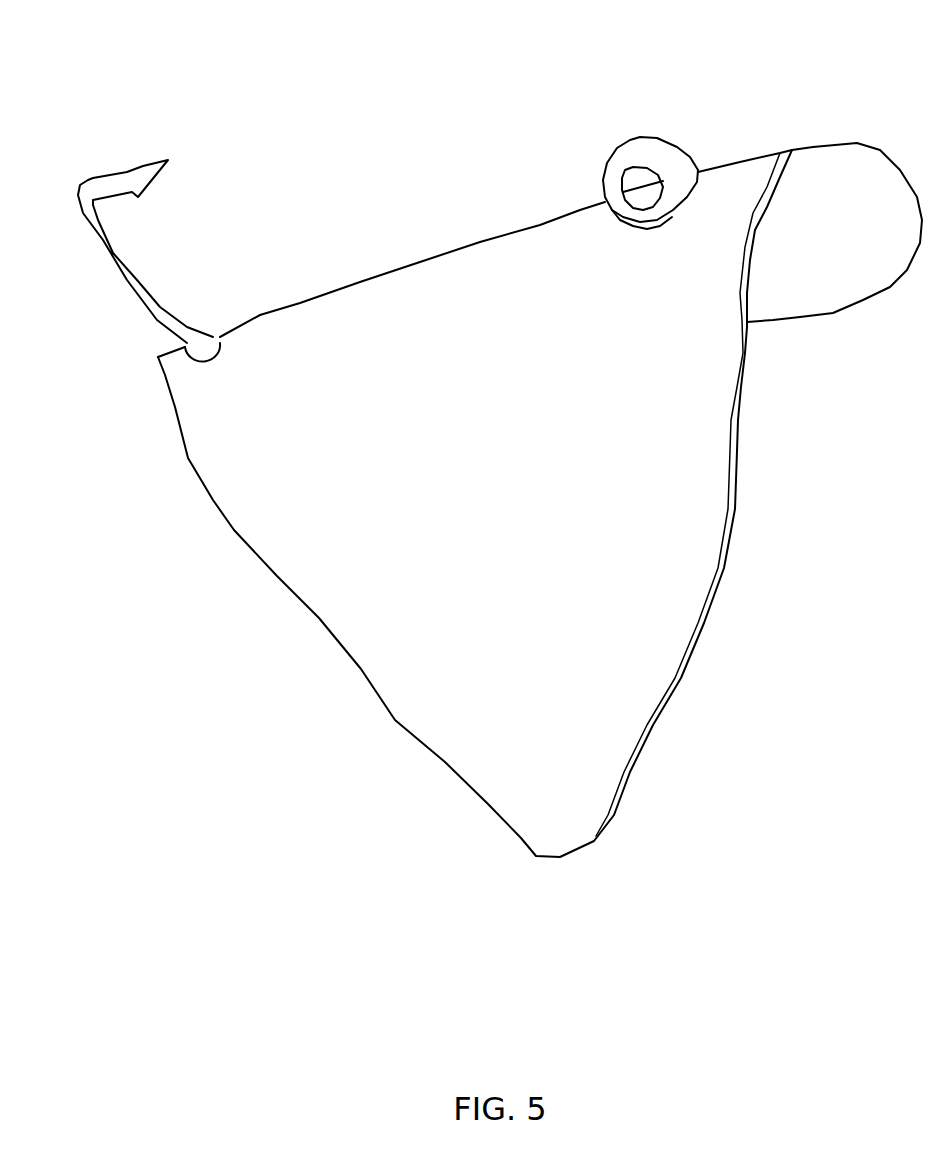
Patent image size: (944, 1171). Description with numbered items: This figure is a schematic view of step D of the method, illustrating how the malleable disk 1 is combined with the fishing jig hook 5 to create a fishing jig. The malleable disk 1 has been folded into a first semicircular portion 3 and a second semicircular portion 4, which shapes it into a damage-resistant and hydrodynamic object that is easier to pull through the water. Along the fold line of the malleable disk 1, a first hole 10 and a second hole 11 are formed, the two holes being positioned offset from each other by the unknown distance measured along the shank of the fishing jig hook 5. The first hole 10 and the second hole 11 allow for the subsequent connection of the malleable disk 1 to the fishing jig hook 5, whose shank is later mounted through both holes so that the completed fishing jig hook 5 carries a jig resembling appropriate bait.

The malleable disk 1 is at (816, 73).
The first semicircular portion 3 is at (367, 648).
The second semicircular portion 4 is at (867, 277).
The fishing jig hook 5 is at (201, 158).
The first hole 10 is at (637, 227).
The second hole 11 is at (203, 357).